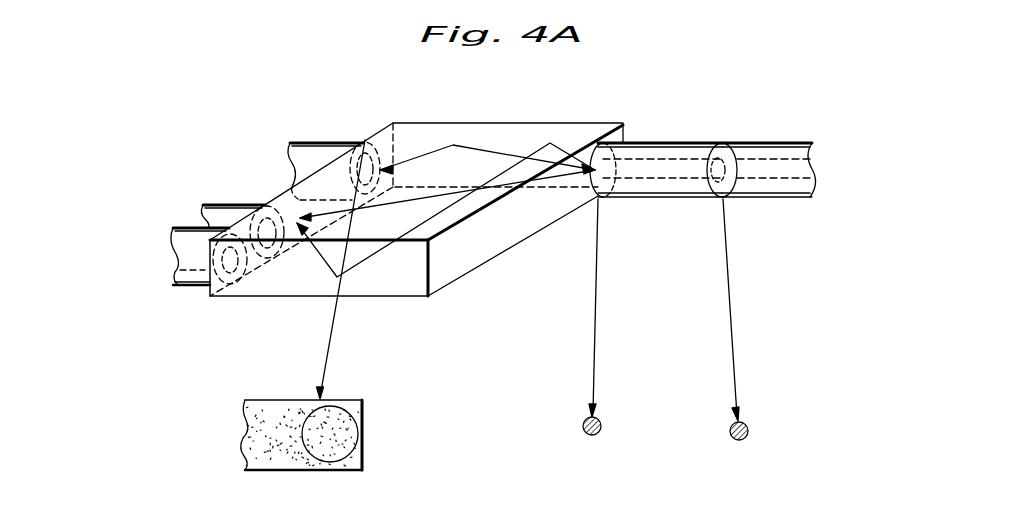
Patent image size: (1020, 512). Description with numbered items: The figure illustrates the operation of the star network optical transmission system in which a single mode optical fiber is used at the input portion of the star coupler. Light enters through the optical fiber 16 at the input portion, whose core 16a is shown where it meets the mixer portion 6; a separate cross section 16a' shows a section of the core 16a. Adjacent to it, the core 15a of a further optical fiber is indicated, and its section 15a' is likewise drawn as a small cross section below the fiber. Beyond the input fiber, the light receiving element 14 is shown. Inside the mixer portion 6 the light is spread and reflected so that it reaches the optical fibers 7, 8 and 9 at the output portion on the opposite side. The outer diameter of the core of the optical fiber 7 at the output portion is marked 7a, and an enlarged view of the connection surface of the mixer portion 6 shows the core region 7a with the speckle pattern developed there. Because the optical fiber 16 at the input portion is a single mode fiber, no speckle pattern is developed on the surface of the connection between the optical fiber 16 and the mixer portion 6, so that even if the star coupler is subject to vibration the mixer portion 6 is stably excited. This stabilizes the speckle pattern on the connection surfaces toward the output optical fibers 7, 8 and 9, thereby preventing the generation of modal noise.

The mixer portion 6 is at (410, 298).
The optical fiber at the output portion 7 is at (317, 142).
The outer diameter of the core of the optical fiber at the output portion 7a is at (367, 142).
The optical fiber at the output portion 8 is at (230, 205).
The optical fiber at the output portion 9 is at (187, 226).
The light receiving element 14 is at (778, 142).
The core of the optical fiber 15 15a is at (704, 199).
The section of the core of the optical fiber 15 15a' is at (772, 319).
The optical fiber at the input portion 16 is at (682, 142).
The core of the optical fiber at the input portion 16a is at (617, 199).
The section of the core of the optical fiber at the input portion 16a' is at (630, 317).